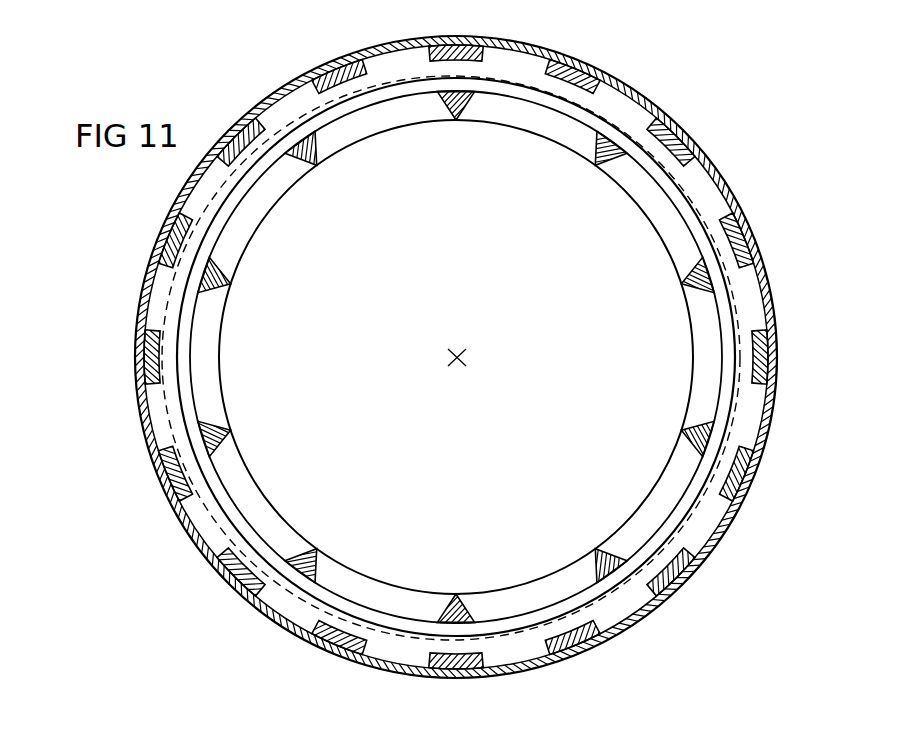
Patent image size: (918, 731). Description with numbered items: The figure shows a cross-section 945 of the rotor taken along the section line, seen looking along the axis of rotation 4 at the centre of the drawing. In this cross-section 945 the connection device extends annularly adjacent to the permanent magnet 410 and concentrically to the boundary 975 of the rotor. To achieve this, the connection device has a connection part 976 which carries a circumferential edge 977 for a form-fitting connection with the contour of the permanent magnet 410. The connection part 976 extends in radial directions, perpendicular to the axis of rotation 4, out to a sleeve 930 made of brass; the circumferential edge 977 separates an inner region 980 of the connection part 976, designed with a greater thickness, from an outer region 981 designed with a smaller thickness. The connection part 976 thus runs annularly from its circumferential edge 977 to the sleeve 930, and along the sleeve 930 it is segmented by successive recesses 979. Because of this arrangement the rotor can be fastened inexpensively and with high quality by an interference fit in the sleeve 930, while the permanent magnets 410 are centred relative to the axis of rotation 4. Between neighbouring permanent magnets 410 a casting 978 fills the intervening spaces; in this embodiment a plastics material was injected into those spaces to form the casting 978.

The axis of rotation 4 is at (465, 355).
The permanent magnet 410 is at (538, 123).
The sleeve 930 is at (717, 540).
The cross-section 945 is at (197, 556).
The boundary 975 is at (137, 302).
The connection part 976 is at (165, 406).
The circumferential edge 977 is at (140, 436).
The casting 978 is at (278, 590).
The recess 979 is at (433, 58).
The inner region 980 is at (222, 512).
The outer region 981 is at (636, 621).